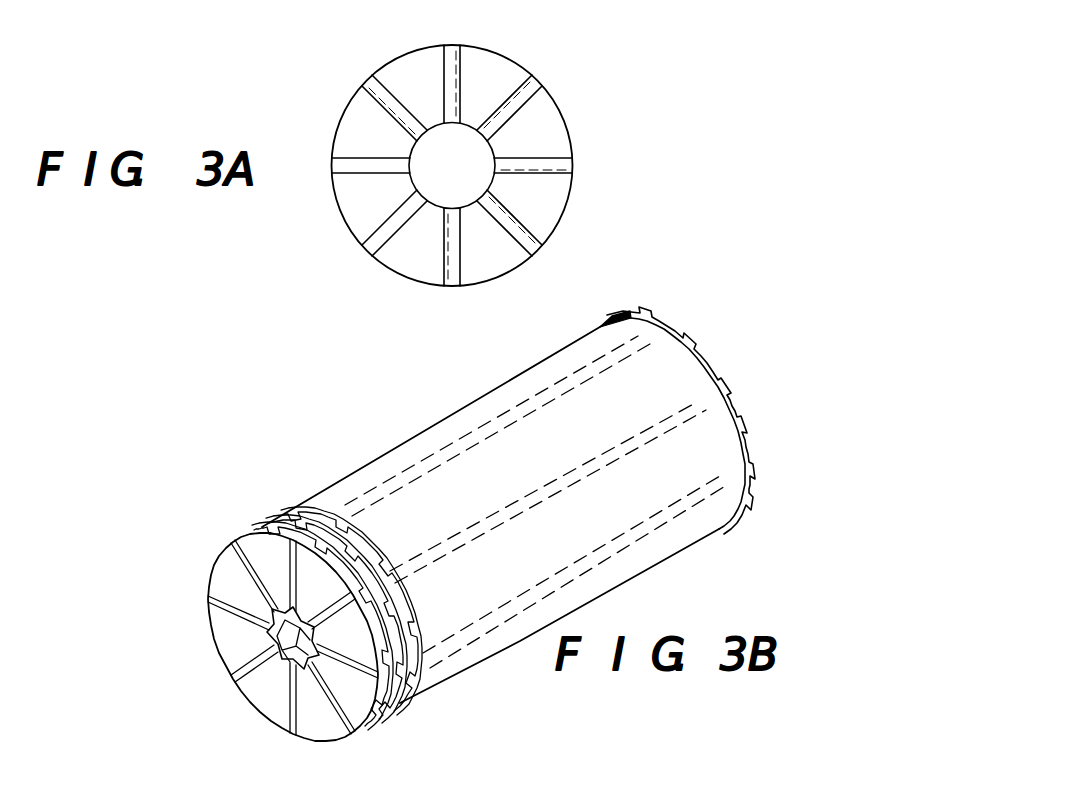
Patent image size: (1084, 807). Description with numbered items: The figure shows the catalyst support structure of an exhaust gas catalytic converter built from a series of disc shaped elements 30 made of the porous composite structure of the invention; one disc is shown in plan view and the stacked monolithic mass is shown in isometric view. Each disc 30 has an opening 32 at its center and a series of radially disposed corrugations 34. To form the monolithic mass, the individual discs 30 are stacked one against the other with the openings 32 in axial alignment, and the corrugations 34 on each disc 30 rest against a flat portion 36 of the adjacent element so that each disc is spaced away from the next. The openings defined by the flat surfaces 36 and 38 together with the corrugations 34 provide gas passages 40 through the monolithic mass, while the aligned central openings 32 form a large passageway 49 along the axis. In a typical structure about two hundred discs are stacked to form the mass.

In FIG. 3A, the disc shaped element 30 is at (489, 46).
In FIG. 3B, the disc shaped element 30 is at (405, 702).
In FIG. 3A, the opening 32 is at (430, 153).
In FIG. 3B, the opening 32 is at (267, 643).
In FIG. 3A, the corrugation 34 is at (543, 166).
In FIG. 3B, the corrugation 34 is at (284, 569).
In FIG. 3B, the flat portion 36 is at (240, 583).
In FIG. 3B, the flat surface 38 is at (340, 540).
In FIG. 3B, the gas passage 40 is at (402, 598).
In FIG. 3B, the passageway 49 is at (276, 652).